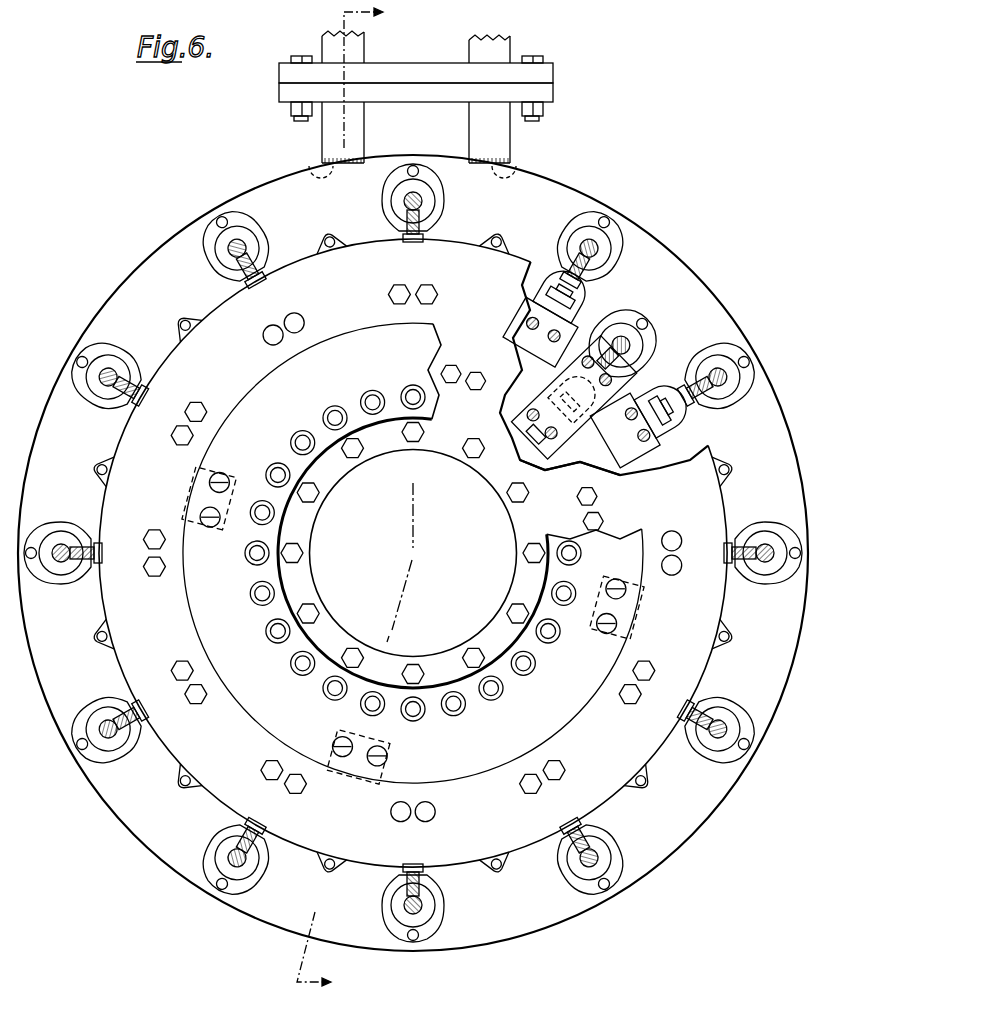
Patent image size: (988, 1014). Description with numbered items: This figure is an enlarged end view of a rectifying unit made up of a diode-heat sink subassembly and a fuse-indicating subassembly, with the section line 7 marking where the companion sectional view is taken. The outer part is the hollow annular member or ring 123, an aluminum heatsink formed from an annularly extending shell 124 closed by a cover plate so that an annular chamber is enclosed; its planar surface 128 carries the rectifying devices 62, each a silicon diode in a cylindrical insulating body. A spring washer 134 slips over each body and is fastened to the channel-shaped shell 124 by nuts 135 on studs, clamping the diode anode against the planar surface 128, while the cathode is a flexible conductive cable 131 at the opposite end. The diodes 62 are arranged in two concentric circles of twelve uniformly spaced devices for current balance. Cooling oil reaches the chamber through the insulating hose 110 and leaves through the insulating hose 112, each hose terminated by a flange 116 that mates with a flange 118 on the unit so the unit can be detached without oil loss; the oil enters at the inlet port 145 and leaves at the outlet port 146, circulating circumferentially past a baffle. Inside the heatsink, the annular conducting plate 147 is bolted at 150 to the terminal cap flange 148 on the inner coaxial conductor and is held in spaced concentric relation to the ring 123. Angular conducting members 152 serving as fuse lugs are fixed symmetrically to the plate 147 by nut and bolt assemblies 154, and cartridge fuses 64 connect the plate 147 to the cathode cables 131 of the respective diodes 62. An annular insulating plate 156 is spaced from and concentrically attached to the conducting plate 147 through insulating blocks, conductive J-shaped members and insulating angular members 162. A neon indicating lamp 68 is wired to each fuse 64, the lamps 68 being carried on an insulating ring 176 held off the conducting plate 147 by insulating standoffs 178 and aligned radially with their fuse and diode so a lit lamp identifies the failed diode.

The section line 7- 7 is at (348, 503).
The rectifying device 62 is at (403, 197).
The cartridge fuse 64 is at (560, 278).
The neon indicating lamp 68 is at (330, 407).
The insulating hose 110 is at (508, 44).
The insulating hose 112 is at (357, 45).
The flange 116 is at (550, 74).
The mating flange 118 is at (549, 95).
The annular member or ring 123 is at (725, 307).
The annularly extending shell 124 is at (648, 228).
The planar surface 128 is at (683, 276).
The flexible conductive cable 131 is at (586, 276).
The spring washer 134 is at (618, 254).
The nut 135 is at (607, 216).
The inlet port 145 is at (518, 170).
The outlet port 146 is at (316, 168).
The annular conducting plate 147 is at (108, 503).
The terminal cap flange 148 is at (495, 522).
The bolts 150 is at (507, 492).
The angular conducting member 152 is at (530, 312).
The nut and bolt assembly 154 is at (638, 437).
The annular insulating plate 156 is at (596, 463).
The insulating angular member 162 is at (520, 423).
The insulating ring 176 is at (205, 612).
The insulating standoff 178 is at (205, 465).